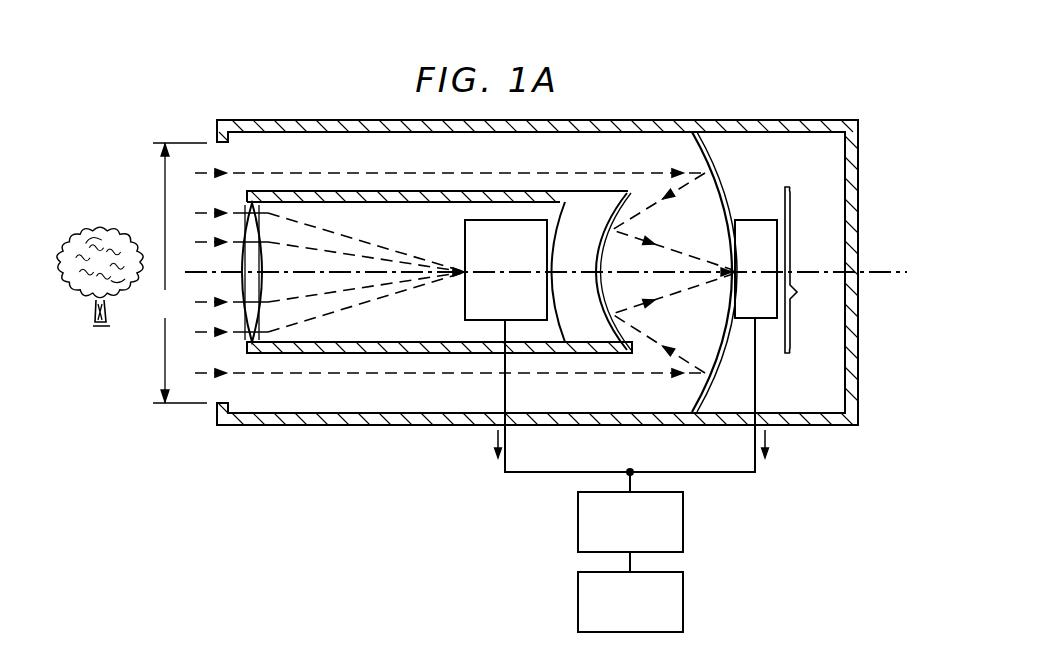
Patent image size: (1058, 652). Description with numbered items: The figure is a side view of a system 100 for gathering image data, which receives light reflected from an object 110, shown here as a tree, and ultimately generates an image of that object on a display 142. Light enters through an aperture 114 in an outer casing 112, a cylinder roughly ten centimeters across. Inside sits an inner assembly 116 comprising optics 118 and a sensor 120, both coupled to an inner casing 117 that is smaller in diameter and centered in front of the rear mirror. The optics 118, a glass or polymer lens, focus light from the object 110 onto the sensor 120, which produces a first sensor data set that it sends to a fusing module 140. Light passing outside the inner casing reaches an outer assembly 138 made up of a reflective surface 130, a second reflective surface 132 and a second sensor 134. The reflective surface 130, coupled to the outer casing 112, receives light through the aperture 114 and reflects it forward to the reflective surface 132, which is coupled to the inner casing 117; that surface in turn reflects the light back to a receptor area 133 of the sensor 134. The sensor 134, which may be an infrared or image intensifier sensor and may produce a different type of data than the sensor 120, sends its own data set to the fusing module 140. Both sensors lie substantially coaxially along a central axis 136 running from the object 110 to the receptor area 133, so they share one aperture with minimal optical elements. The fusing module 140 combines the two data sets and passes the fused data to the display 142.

The system 100 is at (314, 76).
The object 110 is at (100, 226).
The outer casing 112 is at (727, 118).
The aperture 114 is at (175, 273).
The inner assembly 116 is at (440, 182).
The inner casing 117 is at (390, 354).
The optics 118 is at (272, 312).
The sensor 120 is at (506, 270).
The reflective surface 130 is at (722, 212).
The reflective surface 132 is at (628, 334).
The receptor area 133 is at (722, 255).
The sensor 134 is at (757, 220).
The central axis 136 is at (880, 268).
The outer assembly 138 is at (810, 270).
The fusing module 140 is at (685, 520).
The display 142 is at (685, 600).